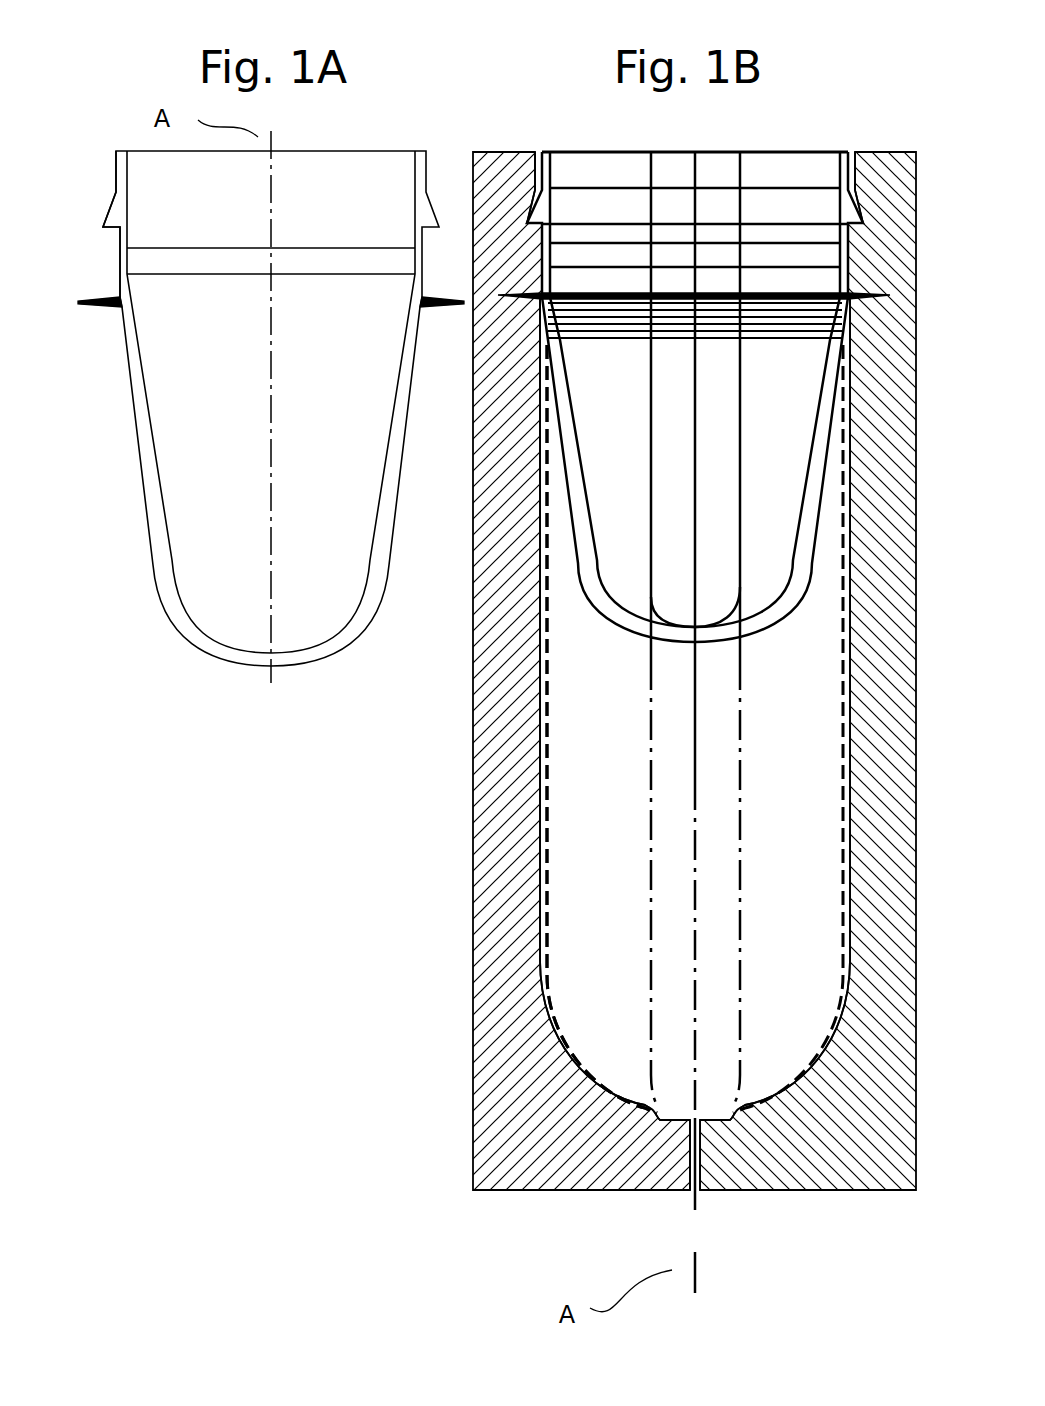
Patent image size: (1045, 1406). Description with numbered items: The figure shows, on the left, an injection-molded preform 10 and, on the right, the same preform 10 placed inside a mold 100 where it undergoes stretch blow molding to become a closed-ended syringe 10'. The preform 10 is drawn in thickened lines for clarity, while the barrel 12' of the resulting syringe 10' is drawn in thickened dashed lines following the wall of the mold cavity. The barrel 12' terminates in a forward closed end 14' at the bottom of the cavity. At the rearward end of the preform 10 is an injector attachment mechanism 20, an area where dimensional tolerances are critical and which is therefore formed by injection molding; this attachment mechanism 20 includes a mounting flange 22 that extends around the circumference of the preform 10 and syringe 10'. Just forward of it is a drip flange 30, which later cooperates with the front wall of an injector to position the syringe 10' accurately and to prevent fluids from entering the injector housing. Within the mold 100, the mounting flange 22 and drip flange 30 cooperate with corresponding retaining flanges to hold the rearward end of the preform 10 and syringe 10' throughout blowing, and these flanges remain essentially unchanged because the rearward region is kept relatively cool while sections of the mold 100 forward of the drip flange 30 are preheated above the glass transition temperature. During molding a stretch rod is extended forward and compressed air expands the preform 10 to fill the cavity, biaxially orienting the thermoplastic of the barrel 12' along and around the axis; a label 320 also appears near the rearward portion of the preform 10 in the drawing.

In FIG. 1A, the preform 10 is at (271, 502).
In FIG. 1B, the preform 10 is at (620, 722).
In FIG. 1B, the syringe 10' is at (490, 729).
In FIG. 1B, the barrel 12' is at (556, 729).
In FIG. 1B, the forward closed end 14' is at (569, 1192).
In FIG. 1B, the injector attachment mechanism 20 is at (880, 182).
In FIG. 1A, the mounting flange 22 is at (97, 212).
In FIG. 1B, the mounting flange 22 is at (520, 200).
In FIG. 1A, the drip flange 30 is at (82, 318).
In FIG. 1B, the drip flange 30 is at (510, 280).
In FIG. 1B, the mold 100 is at (592, 646).
In FIG. 1B, the neck portion 320 is at (732, 217).